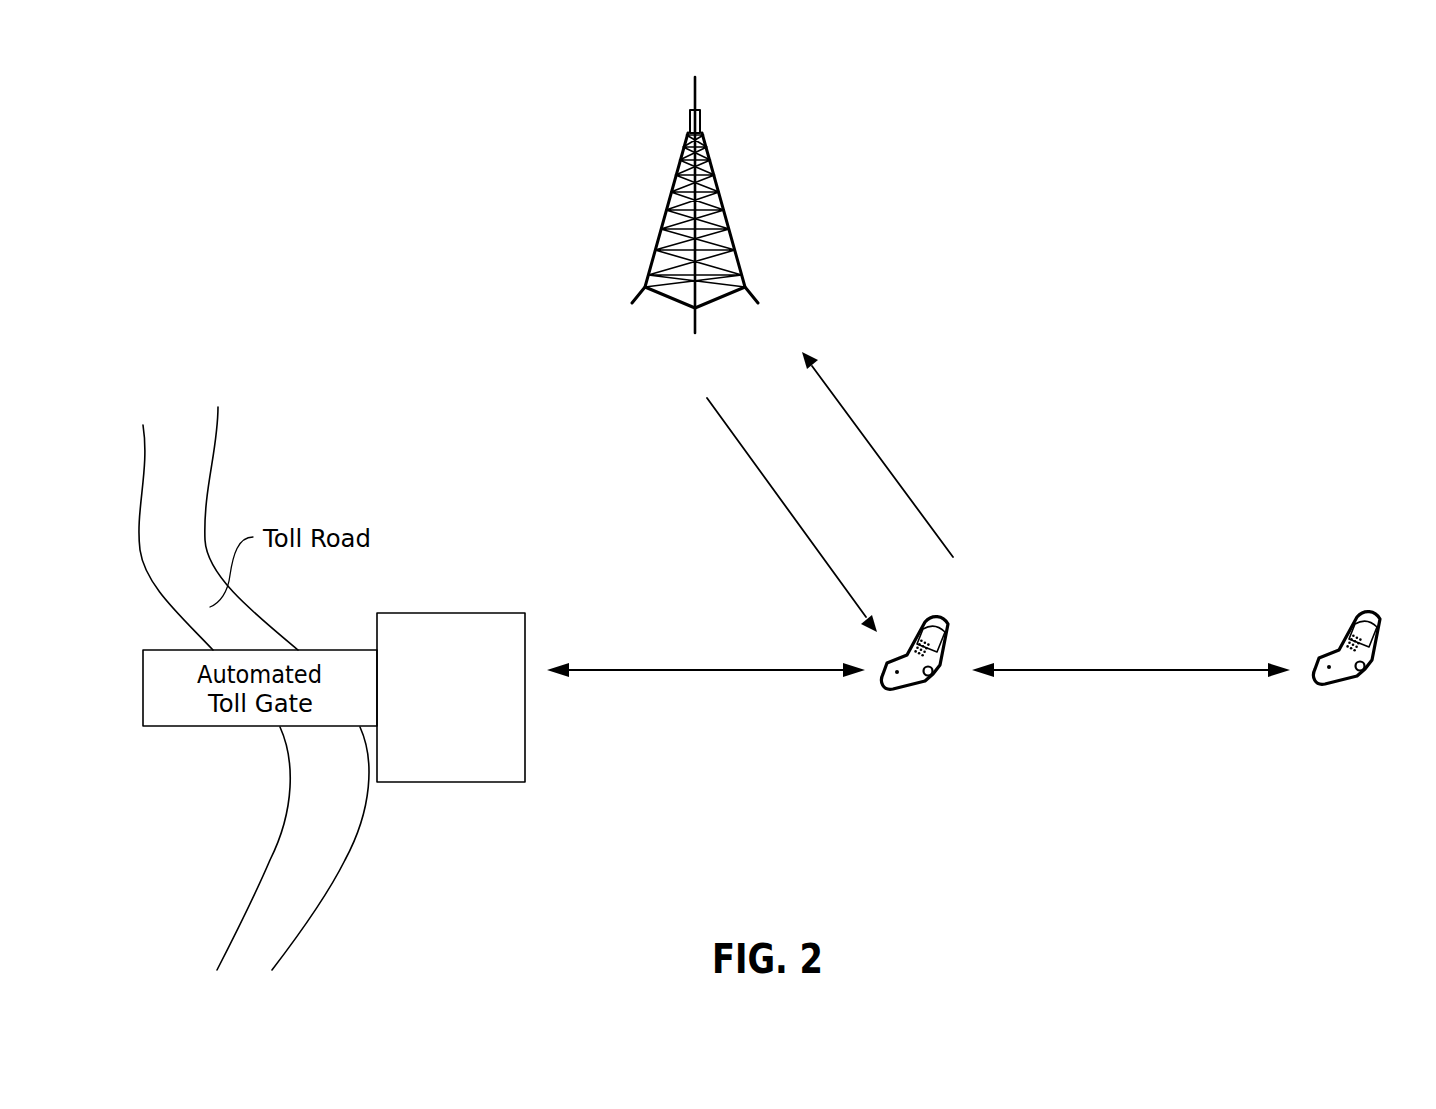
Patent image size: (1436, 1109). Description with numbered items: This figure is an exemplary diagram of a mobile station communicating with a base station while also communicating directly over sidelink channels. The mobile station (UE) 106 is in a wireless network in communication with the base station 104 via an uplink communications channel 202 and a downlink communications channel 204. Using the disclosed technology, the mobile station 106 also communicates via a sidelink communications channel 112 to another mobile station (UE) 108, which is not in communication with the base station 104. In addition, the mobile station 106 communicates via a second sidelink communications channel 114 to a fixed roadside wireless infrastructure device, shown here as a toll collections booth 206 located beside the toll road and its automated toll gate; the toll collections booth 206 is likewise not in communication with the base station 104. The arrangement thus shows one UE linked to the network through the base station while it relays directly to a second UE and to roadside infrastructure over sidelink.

The base station 104 is at (703, 113).
The mobile station (UE) 106 is at (944, 623).
The mobile station (UE) 108 is at (1373, 617).
The sidelink communications channel 112 is at (1155, 670).
The sidelink communications channel 114 is at (730, 670).
The uplink communications channel 202 is at (850, 417).
The downlink communications channel 204 is at (762, 468).
The toll collections booth 206 is at (472, 725).